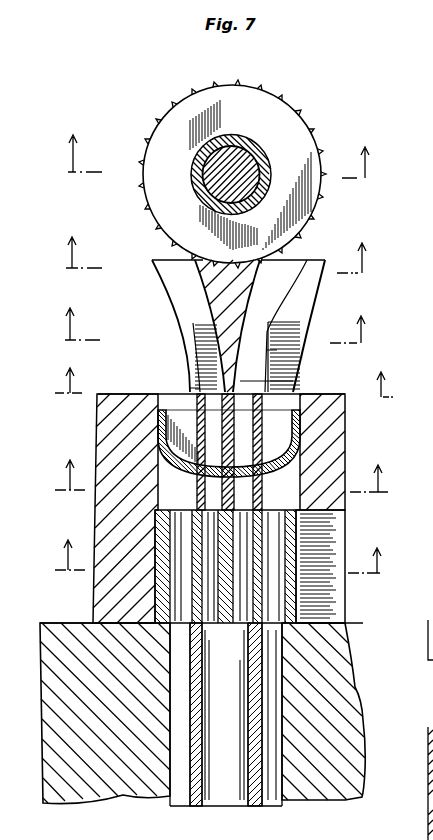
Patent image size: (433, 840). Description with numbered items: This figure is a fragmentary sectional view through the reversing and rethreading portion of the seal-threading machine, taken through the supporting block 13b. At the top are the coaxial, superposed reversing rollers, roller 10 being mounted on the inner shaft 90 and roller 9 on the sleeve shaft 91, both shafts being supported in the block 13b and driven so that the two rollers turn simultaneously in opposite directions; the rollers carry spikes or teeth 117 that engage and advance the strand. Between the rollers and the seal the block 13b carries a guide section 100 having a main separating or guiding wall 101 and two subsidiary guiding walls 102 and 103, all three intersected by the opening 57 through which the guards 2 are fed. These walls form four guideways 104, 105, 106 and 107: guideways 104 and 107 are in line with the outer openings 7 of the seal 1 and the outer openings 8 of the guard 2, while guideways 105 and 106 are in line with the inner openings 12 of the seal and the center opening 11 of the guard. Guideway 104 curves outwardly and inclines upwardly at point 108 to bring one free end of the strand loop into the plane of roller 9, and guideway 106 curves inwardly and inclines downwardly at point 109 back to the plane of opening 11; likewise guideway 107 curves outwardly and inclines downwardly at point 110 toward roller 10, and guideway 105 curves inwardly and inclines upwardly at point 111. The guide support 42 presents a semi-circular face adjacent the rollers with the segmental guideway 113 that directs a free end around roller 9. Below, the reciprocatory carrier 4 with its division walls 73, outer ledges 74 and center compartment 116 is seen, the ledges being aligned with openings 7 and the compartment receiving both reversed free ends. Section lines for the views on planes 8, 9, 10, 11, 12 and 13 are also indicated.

The perforated member 1 is at (300, 540).
The gripping and severing member or guard 2 is at (296, 437).
The reciprocatory member or carrier 4 is at (246, 808).
The outer openings 7 is at (310, 610).
The outer openings 8 is at (158, 470).
The roller 9 is at (222, 476).
The roller 10 is at (300, 213).
The center opening 11 is at (358, 408).
The inner openings 12 is at (218, 255).
The section line 13 is at (221, 154).
The supporting block 13b is at (330, 690).
The supporting guide 42 is at (432, 830).
The opening 57 is at (158, 441).
The division walls 73 is at (260, 735).
The outer ledges 74 is at (273, 695).
The inner shaft 90 is at (225, 163).
The sleeve shaft 91 is at (208, 183).
The guide section 100 is at (159, 357).
The main separating or guiding wall 101 is at (250, 278).
The subsidiary separating or guiding wall 102 is at (278, 357).
The subsidiary separating or guiding wall 103 is at (193, 323).
The guideway 104 is at (305, 500).
The guideway 105 is at (330, 462).
The guideway 106 is at (160, 500).
The guideway 107 is at (162, 518).
The point 108 is at (282, 375).
The point 109 is at (158, 413).
The point 110 is at (190, 387).
The point 111 is at (300, 392).
The segmental-shape guideway 113 is at (340, 358).
The center compartment 116 is at (218, 815).
The spikes or teeth 117 is at (170, 113).